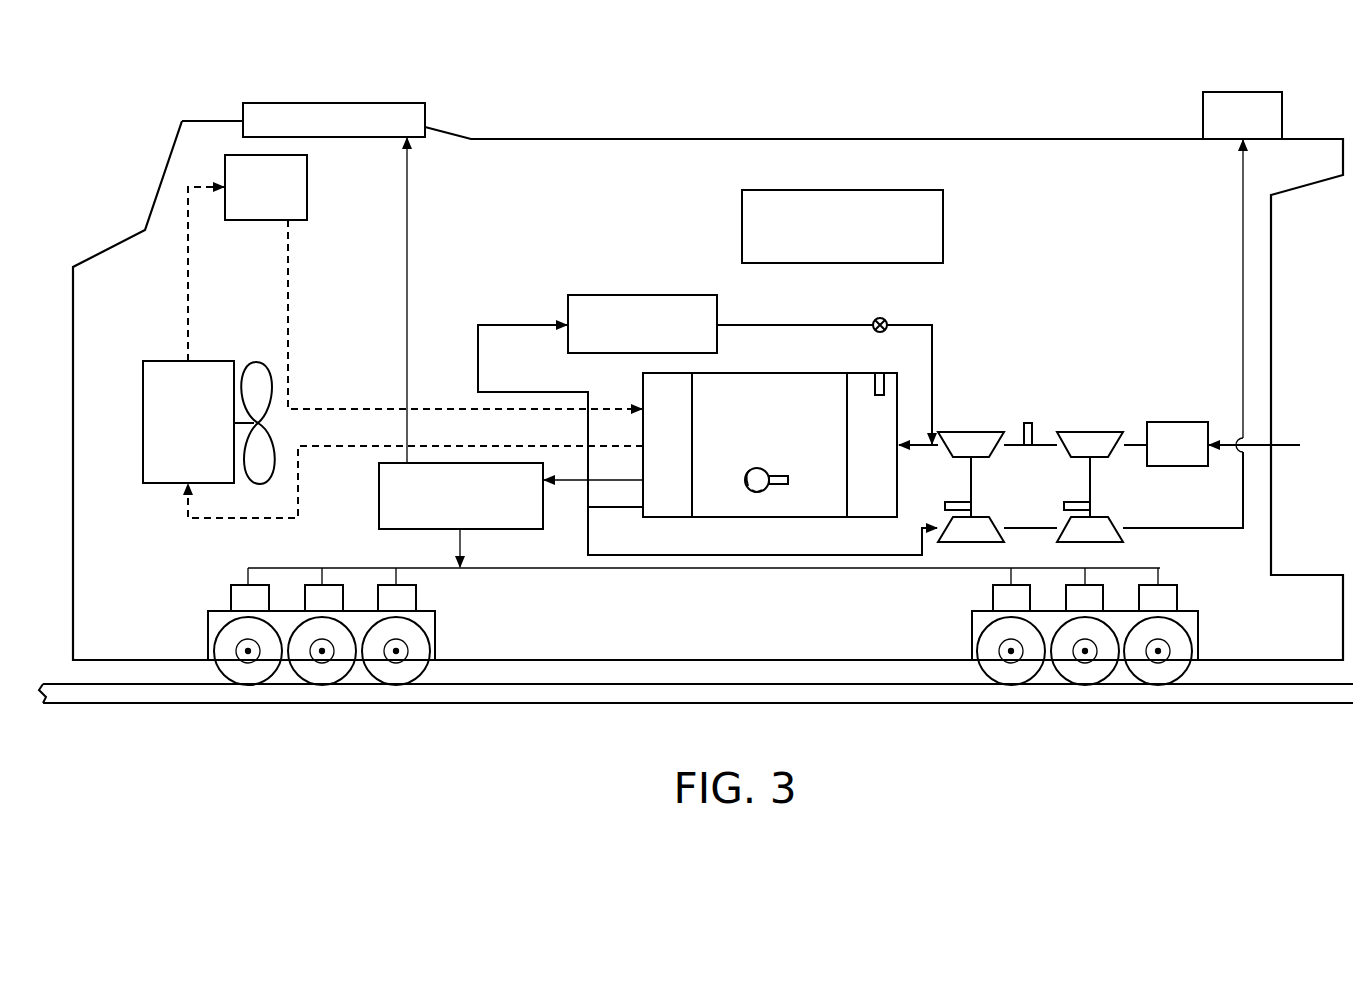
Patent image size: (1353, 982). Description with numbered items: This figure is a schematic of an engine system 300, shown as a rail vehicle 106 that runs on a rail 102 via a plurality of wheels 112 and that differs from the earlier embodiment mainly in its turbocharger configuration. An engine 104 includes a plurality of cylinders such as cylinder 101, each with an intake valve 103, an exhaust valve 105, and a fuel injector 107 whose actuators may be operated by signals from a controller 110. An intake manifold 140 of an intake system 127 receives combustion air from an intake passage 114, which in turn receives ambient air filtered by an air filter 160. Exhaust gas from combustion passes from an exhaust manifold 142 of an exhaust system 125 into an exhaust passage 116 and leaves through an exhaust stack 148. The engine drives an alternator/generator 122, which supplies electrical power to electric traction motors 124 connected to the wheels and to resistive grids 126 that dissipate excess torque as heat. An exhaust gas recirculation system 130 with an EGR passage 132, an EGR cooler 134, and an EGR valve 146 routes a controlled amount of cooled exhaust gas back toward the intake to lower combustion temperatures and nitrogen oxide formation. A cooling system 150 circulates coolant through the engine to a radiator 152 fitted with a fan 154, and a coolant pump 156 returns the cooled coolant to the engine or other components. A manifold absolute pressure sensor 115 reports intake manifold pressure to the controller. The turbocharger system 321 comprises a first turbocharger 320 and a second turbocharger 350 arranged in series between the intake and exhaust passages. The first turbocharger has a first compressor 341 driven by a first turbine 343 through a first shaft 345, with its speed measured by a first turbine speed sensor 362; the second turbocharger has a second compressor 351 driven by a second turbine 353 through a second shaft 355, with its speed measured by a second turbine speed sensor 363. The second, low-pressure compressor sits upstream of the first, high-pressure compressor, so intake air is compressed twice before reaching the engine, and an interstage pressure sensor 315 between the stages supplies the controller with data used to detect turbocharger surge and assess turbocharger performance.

The engine system 300 is at (932, 36).
The rail 102 is at (1270, 705).
The engine 104 is at (770, 445).
The rail vehicle 106 is at (1010, 138).
The controller 110 is at (943, 201).
The wheels 112 is at (428, 630).
The intake passage 114 is at (911, 444).
The manifold absolute pressure (MAP) sensor 115 is at (882, 372).
The exhaust passage 116 is at (605, 508).
The alternator/generator 122 is at (378, 500).
The electric traction motors 124 is at (416, 602).
The exhaust system 125 is at (578, 549).
The resistive grids 126 is at (410, 102).
The intake system 127 is at (1153, 325).
The exhaust gas recirculation (EGR) system 130 is at (932, 314).
The EGR passage 132 is at (495, 324).
The EGR cooler 134 is at (642, 324).
The intake manifold 140 is at (867, 445).
The exhaust manifold 142 is at (672, 445).
The EGR valve 146 is at (877, 318).
The exhaust stack 148 is at (1242, 272).
The cooling system 150 is at (165, 317).
The radiator 152 is at (188, 422).
The fan 154 is at (266, 360).
The coolant pump 156 is at (247, 258).
The air filter 160 is at (1177, 444).
The cylinder 101 is at (766, 471).
The intake valve 103 is at (749, 473).
The exhaust valve 105 is at (753, 493).
The fuel injector 107 is at (781, 486).
The interstage pressure sensor 315 is at (1029, 424).
The first turbocharger 320 is at (954, 490).
The turbocharger system 321 is at (1070, 392).
The first compressor 341 is at (980, 462).
The first turbine 343 is at (977, 545).
The first shaft 345 is at (972, 487).
The second turbocharger 350 is at (1075, 478).
The second compressor 351 is at (1097, 461).
The second turbine 353 is at (1095, 545).
The second shaft 355 is at (1090, 486).
The first turbine speed sensor 362 is at (944, 506).
The second turbine speed sensor 363 is at (1063, 507).